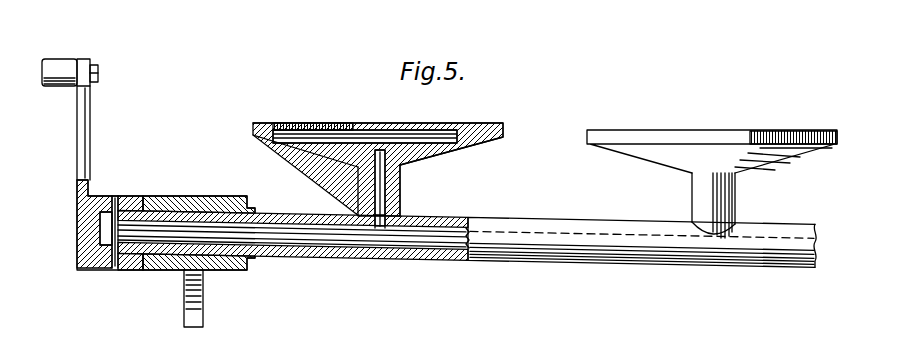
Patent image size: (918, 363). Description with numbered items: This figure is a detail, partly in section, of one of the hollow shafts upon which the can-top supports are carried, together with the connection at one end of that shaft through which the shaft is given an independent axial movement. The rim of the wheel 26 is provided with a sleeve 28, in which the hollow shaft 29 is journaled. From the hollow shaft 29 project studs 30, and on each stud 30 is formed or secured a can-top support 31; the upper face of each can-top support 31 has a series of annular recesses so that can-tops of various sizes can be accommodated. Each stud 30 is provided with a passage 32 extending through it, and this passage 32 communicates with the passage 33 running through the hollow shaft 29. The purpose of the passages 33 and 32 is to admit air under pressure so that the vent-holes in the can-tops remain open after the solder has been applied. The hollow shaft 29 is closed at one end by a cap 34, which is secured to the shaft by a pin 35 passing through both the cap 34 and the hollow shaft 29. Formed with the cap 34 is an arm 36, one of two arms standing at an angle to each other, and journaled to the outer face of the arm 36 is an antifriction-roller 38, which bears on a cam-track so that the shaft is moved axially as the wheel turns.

The wheel 26 is at (198, 328).
The sleeve 28 is at (213, 210).
The hollow shaft 29 is at (530, 227).
The stud 30 is at (402, 184).
The can-top support 31 is at (483, 150).
The passage 32 is at (380, 200).
The passage 33 is at (443, 242).
The cap 34 is at (127, 262).
The pin 35 is at (118, 198).
The arm 36 is at (88, 134).
The antifriction-roller 38 is at (58, 67).